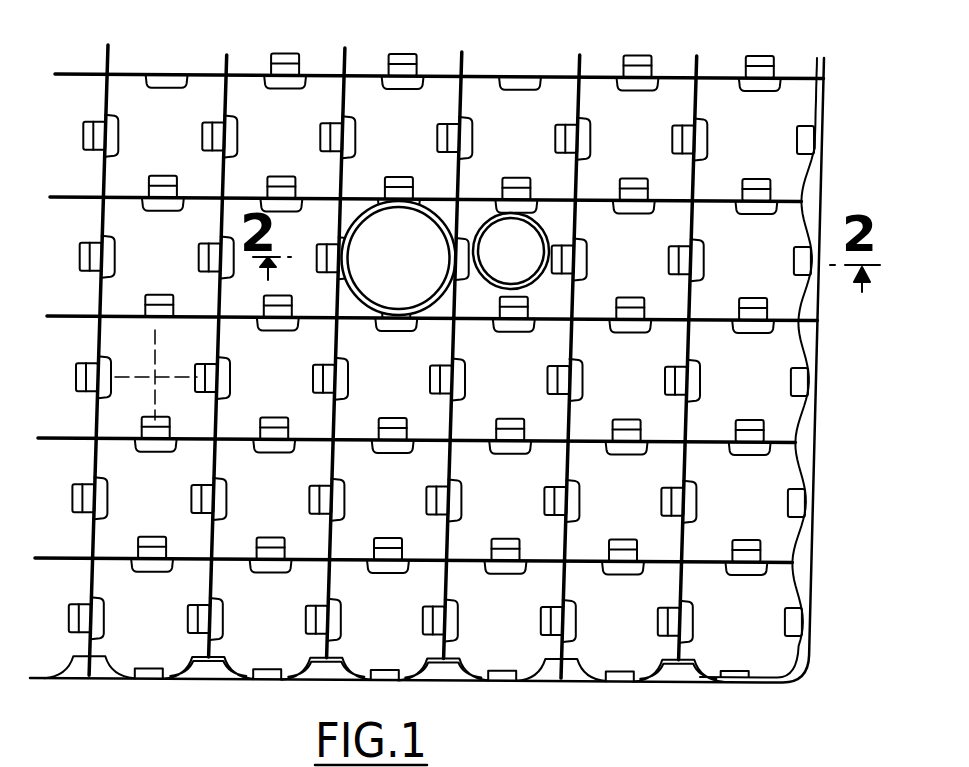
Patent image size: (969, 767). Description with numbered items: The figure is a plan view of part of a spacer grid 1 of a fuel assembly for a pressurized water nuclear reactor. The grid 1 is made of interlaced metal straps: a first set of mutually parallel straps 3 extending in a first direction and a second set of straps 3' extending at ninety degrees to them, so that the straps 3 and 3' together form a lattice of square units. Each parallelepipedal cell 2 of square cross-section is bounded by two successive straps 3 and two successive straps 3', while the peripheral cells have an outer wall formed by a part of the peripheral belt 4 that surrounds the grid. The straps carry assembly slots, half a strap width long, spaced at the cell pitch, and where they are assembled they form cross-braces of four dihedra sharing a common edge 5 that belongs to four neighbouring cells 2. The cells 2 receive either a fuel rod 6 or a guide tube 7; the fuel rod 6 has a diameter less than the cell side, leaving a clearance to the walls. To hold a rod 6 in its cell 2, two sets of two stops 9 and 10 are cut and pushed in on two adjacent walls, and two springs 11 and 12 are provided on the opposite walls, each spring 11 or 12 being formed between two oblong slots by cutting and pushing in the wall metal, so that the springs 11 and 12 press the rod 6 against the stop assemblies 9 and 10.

The spacer grid 1 is at (451, 370).
The cell 2 is at (639, 494).
The strap 3 is at (488, 159).
The strap 3' is at (421, 318).
The peripheral belt 4 is at (781, 368).
The common edge 5 is at (396, 363).
The fuel rod 6 is at (507, 291).
The guide tube 7 is at (399, 286).
The stop 9 is at (455, 341).
The stop 10 is at (535, 397).
The spring 11 is at (494, 371).
The spring 12 is at (565, 222).